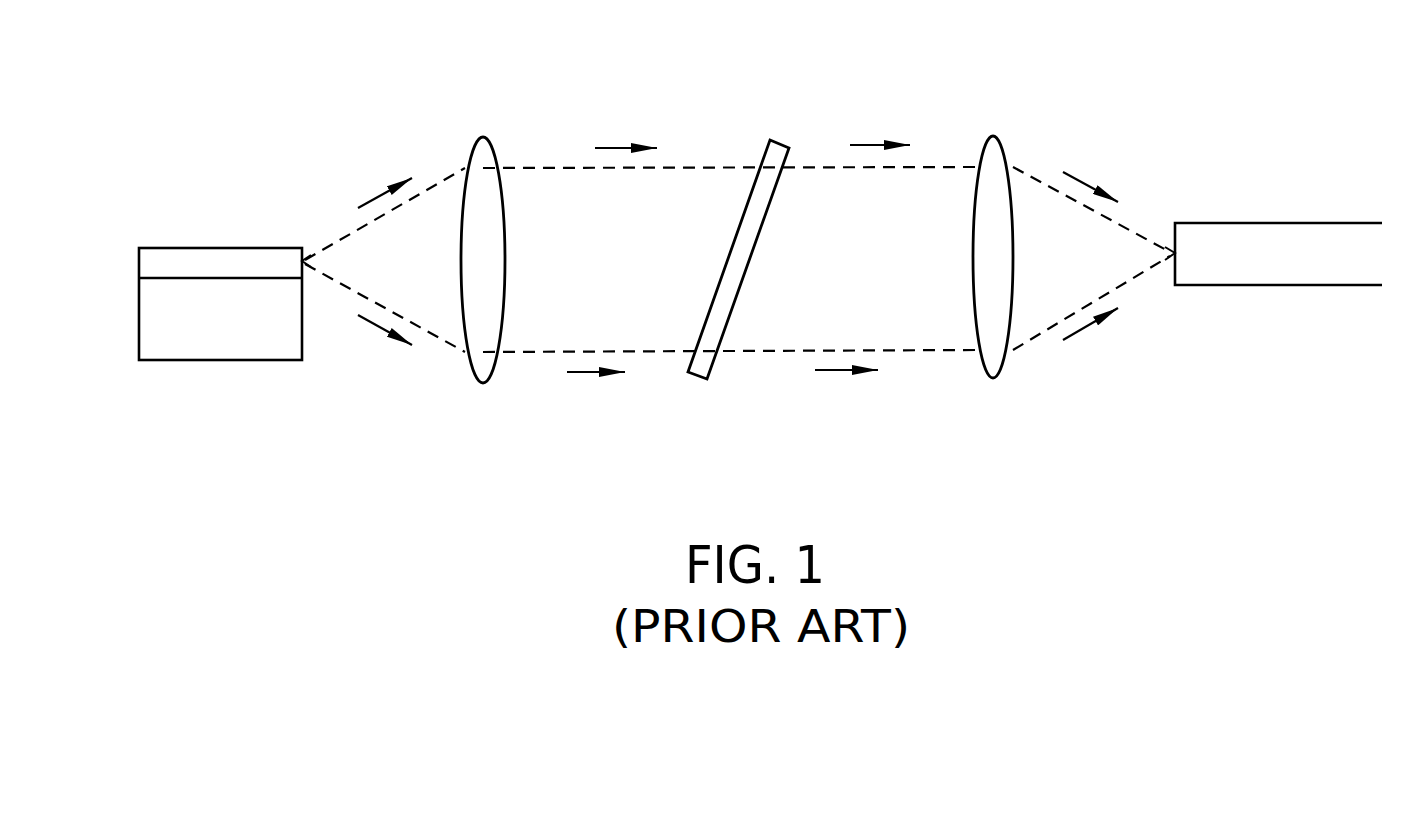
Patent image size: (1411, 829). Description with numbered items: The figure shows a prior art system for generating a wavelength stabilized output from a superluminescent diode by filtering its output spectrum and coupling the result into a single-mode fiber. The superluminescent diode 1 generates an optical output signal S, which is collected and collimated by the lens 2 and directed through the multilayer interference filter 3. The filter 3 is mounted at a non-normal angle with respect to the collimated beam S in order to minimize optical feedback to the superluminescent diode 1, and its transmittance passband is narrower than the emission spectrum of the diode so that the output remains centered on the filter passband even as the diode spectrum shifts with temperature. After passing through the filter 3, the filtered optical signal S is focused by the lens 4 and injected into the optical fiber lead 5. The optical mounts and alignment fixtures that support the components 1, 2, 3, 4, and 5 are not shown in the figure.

The superluminescent diode 1 is at (218, 248).
The lens 2 is at (484, 137).
The multilayer interference filter 3 is at (782, 138).
The lens 4 is at (993, 135).
The optical fiber lead 5 is at (1276, 223).
The optical output signal S is at (342, 283).